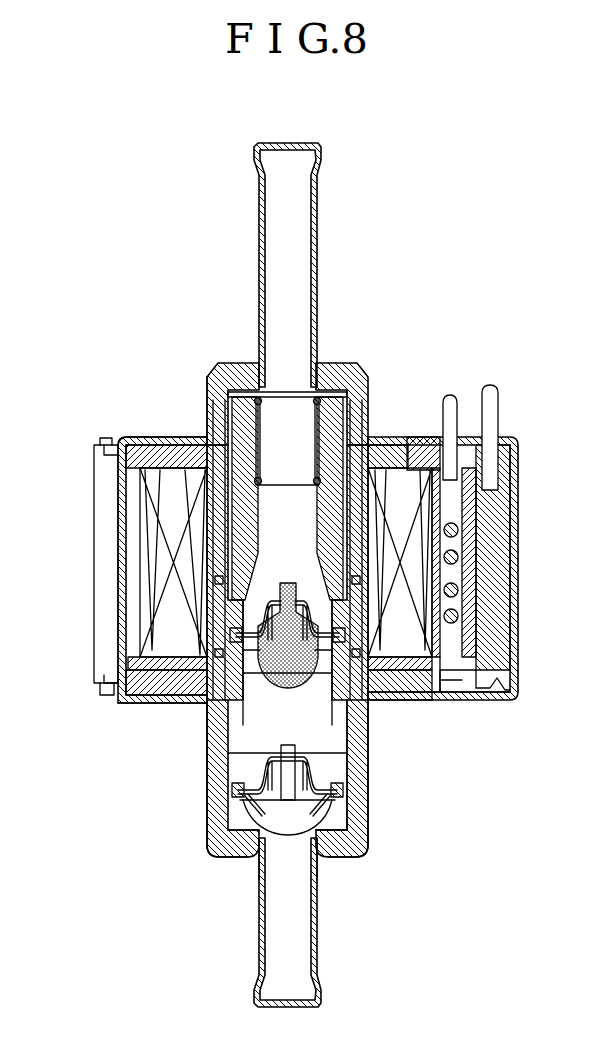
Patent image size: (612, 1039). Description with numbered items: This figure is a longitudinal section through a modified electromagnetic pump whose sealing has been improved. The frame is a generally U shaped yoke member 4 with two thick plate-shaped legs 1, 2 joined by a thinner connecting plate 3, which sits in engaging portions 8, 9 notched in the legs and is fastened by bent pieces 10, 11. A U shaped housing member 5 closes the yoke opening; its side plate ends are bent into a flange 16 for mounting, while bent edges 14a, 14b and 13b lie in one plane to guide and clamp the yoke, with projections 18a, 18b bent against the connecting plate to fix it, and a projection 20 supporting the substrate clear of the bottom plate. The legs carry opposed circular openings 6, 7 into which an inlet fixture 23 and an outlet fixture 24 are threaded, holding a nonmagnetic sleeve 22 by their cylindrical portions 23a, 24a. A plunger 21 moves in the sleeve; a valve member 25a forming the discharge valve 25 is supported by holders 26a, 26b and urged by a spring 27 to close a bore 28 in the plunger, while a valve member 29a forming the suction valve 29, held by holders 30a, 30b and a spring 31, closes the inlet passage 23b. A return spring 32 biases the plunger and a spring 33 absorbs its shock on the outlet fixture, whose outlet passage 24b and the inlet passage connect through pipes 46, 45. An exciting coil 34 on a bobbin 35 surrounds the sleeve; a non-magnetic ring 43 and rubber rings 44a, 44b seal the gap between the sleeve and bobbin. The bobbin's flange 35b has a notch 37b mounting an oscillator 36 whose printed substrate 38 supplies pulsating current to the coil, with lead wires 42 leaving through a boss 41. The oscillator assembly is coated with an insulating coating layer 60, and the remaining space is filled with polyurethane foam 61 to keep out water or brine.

The leg 1 is at (408, 440).
The leg 2 is at (397, 728).
The connecting plate 3 is at (126, 583).
The yoke member 4 is at (118, 520).
The housing member 5 is at (514, 520).
The circular opening 6 is at (352, 445).
The circular opening 7 is at (372, 720).
The engaging portion 8 is at (114, 438).
The engaging portion 9 is at (118, 700).
The bent piece 10 is at (122, 438).
The bent piece 11 is at (128, 695).
The bent edge 13b is at (470, 700).
The bent edge 14a is at (395, 440).
The bent edge 14b is at (420, 680).
The flange 16 is at (106, 553).
The projection 18a is at (110, 443).
The projection 18b is at (100, 688).
The projection 20 is at (500, 682).
The plunger 21 is at (208, 395).
The nonmagnetic sleeve 22 is at (211, 407).
The inlet fixture 23 is at (365, 850).
The cylindrical portion 23a is at (218, 740).
The inlet passage 23b is at (330, 855).
The outlet fixture 24 is at (346, 405).
The cylindrical portion 24a is at (232, 470).
The outlet passage 24b is at (246, 398).
The discharge valve 25 is at (274, 680).
The valve member 25a is at (318, 752).
The holder 26a is at (272, 598).
The holder 26b is at (342, 765).
The spring 27 is at (319, 606).
The bore 28 is at (232, 496).
The suction valve 29 is at (306, 745).
The valve member 29a is at (266, 815).
The holder 30a is at (212, 807).
The holder 30b is at (242, 820).
The spring 31 is at (336, 832).
The return spring 32 is at (345, 797).
The spring 33 is at (322, 400).
The exciting coil 34 is at (420, 715).
The bobbin 35 is at (398, 700).
The flange 35b is at (450, 700).
The oscillator 36 is at (482, 580).
The notch 37b is at (490, 662).
The printed substrate 38 is at (458, 600).
The boss 41 is at (508, 440).
The lead wires 42 is at (490, 400).
The non-magnetic ring 43 is at (170, 690).
The rubber ring 44a is at (142, 690).
The rubber ring 44b is at (212, 690).
The pipe 45 is at (293, 950).
The pipe 46 is at (293, 219).
The insulating coating layer 60 is at (140, 625).
The polyurethane foam 61 is at (135, 652).